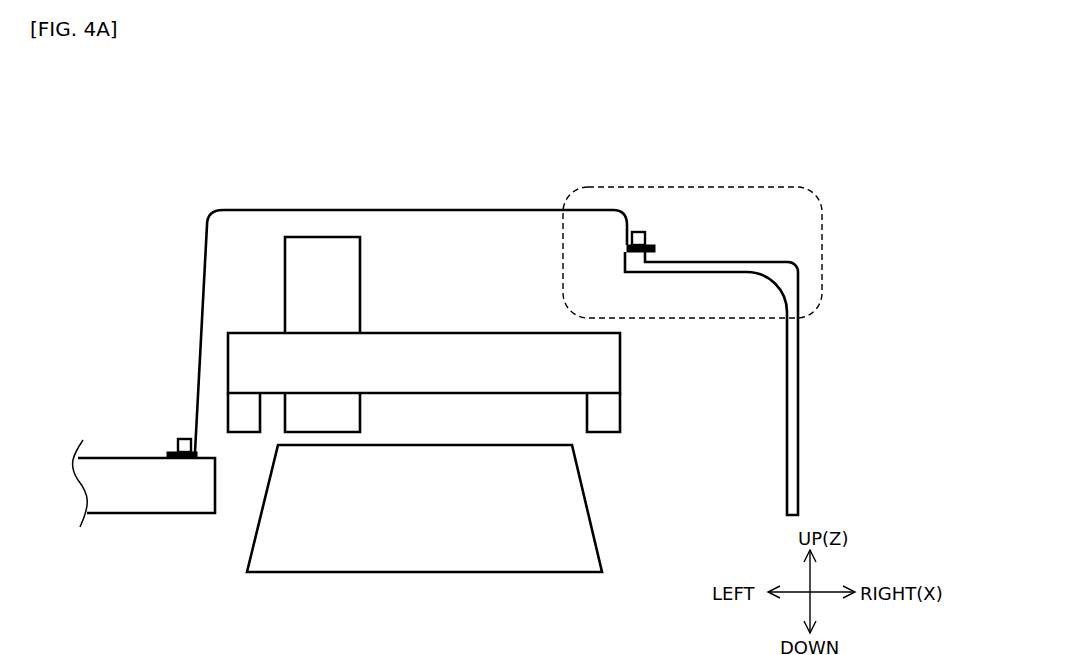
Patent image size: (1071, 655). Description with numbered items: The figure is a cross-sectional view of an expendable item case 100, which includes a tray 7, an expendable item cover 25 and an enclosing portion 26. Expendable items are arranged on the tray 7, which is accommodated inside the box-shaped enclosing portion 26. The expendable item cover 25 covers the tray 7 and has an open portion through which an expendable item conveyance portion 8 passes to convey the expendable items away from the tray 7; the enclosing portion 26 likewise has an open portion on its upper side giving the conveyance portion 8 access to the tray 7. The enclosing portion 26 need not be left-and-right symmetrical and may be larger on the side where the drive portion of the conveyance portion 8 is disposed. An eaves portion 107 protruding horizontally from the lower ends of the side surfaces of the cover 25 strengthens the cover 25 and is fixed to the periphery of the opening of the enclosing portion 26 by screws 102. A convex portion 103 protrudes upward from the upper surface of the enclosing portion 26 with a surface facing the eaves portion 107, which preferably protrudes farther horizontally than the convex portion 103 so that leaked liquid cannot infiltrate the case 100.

The tray 7 is at (260, 547).
The expendable item conveyance portion 8 is at (312, 260).
The expendable item cover 25 is at (422, 209).
The enclosing portion 26 is at (798, 370).
The expendable item case 100 is at (507, 258).
The screws 102 is at (183, 440).
The convex portion 103 is at (645, 262).
The eaves portion 107 is at (172, 453).